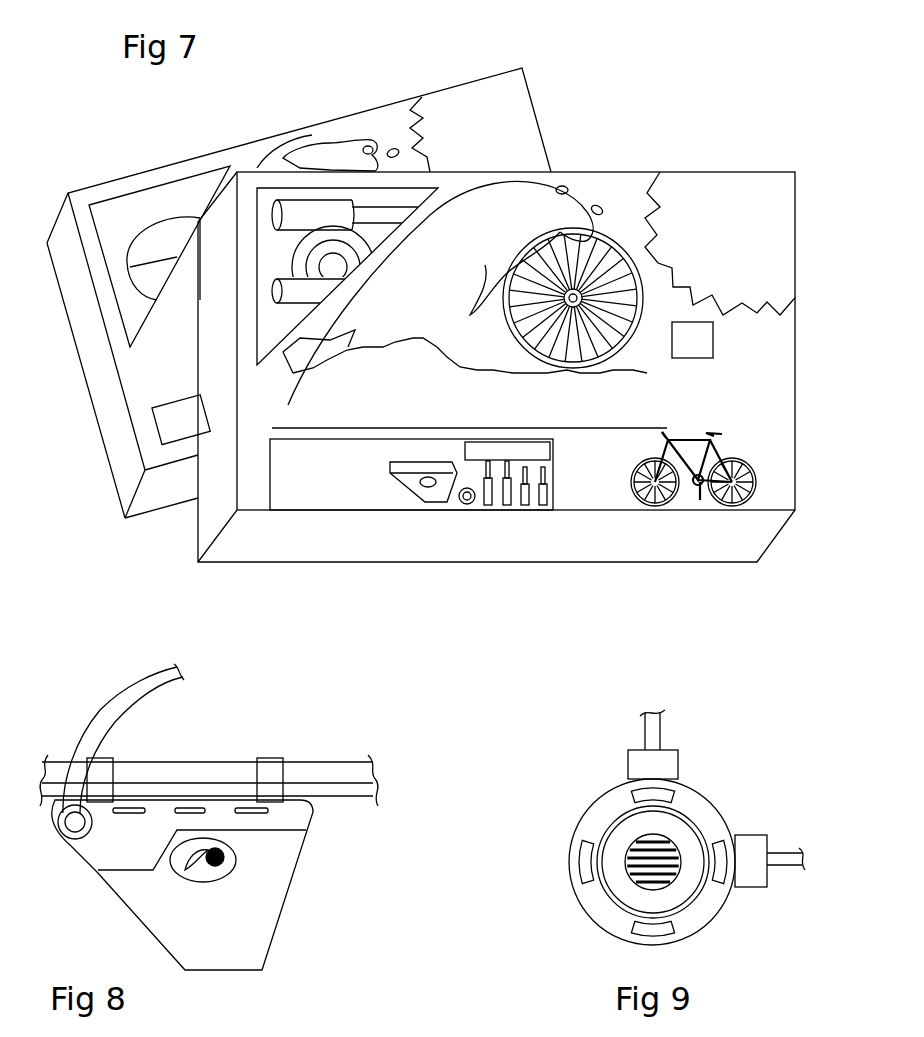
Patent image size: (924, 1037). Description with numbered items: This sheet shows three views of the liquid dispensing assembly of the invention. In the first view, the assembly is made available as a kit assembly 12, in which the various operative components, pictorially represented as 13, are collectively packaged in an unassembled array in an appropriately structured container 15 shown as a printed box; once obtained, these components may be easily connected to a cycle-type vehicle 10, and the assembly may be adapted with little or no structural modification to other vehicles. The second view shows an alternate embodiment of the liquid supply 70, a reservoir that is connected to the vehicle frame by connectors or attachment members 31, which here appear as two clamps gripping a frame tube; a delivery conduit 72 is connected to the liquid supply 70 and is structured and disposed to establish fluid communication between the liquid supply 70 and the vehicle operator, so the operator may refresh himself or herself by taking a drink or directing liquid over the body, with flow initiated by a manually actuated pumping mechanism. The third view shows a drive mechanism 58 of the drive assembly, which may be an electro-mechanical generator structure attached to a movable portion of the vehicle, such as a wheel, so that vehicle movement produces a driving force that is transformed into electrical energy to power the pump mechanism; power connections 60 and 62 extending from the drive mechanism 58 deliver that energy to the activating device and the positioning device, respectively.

In FIG. 8, the vehicle 10 is at (251, 707).
In FIG. 7, the kit assembly 12 is at (572, 118).
In FIG. 7, the operative components 13 is at (543, 508).
In FIG. 7, the container 15 is at (529, 92).
In FIG. 8, the attachment members 31 is at (105, 757).
In FIG. 9, the drive mechanism 58 is at (740, 794).
In FIG. 9, the power connection 60 is at (783, 866).
In FIG. 9, the power connection 62 is at (645, 735).
In FIG. 8, the liquid supply 70 is at (316, 882).
In FIG. 8, the delivery conduit 72 is at (98, 676).